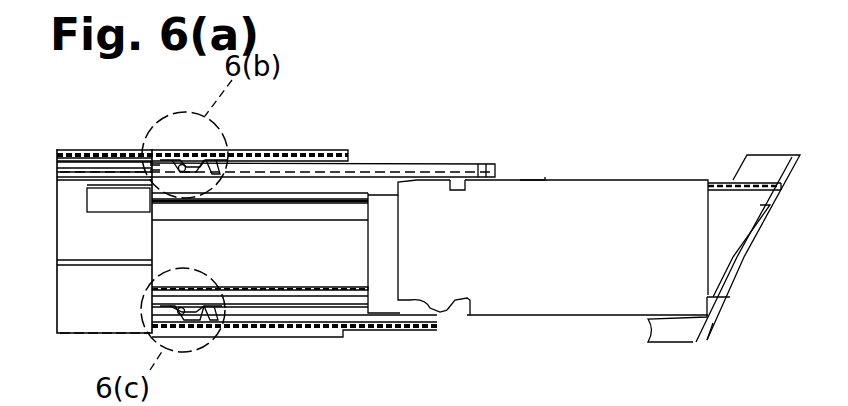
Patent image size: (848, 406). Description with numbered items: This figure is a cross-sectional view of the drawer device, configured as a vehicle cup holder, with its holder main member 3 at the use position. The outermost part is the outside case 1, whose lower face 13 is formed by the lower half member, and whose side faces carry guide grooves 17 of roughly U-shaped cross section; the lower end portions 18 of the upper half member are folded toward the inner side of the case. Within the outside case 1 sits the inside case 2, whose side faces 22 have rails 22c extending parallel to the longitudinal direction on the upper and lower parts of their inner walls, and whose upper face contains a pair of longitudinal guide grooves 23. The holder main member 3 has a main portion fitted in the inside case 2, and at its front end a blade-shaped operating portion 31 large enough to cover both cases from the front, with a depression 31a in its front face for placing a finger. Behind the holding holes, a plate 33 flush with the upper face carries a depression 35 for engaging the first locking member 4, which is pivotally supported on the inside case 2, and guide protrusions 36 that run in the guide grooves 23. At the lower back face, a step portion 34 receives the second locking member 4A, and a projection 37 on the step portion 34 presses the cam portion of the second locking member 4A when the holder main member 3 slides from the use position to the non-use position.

The outside case 1 is at (316, 156).
The inside case 2 is at (421, 167).
The holder main member 3 is at (644, 178).
The first locking member 4 is at (200, 164).
The second locking member 4A is at (190, 322).
The lower face 13 is at (70, 334).
The guide grooves 17 is at (66, 168).
The lower end portions 18 is at (58, 262).
The side faces 22 is at (336, 270).
The rails 22c is at (103, 219).
The guide grooves 23 is at (383, 168).
The operating portion 31 is at (708, 325).
The depression 31a is at (718, 257).
The plate 33 is at (530, 182).
The step portion 34 is at (460, 314).
The depression 35 is at (458, 186).
The guide protrusions 36 is at (482, 178).
The projection 37 is at (441, 316).